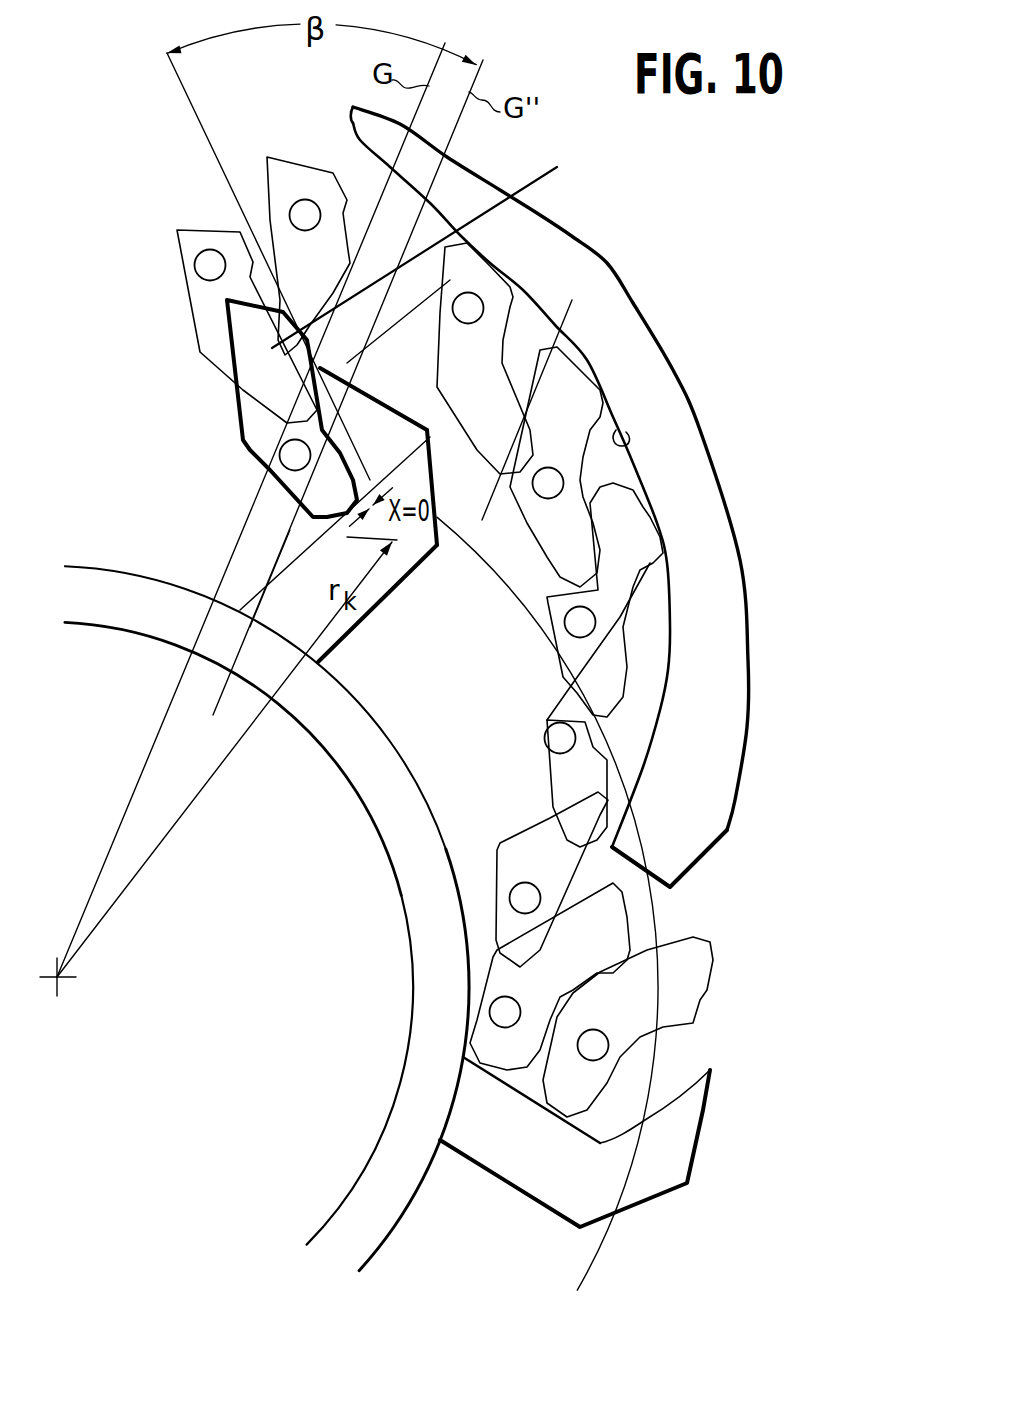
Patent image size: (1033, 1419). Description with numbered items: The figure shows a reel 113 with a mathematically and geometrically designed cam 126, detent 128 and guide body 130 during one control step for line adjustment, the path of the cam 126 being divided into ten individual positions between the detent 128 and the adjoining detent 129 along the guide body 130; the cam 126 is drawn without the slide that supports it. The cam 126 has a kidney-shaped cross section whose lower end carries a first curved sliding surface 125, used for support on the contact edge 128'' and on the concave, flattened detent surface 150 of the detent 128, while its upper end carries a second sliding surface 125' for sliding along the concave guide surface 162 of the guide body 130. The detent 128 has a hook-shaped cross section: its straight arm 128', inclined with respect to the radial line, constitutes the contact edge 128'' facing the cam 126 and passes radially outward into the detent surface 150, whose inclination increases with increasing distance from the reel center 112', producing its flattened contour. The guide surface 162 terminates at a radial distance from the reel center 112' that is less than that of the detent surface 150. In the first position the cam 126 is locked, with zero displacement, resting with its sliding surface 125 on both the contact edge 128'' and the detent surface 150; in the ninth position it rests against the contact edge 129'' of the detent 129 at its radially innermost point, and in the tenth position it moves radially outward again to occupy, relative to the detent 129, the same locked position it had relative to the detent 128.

The reel center 112' is at (99, 1006).
The reel 113 is at (765, 763).
The first curved sliding surface 125 is at (420, 677).
The second sliding surface 125' is at (439, 255).
The cam 126 is at (178, 236).
The detent 128 is at (468, 487).
The straight arm 128' is at (386, 611).
The contact edge 128'' is at (212, 578).
The adjoining detent 129 is at (603, 1146).
The contact edge 129'' is at (518, 1181).
The guide body 130 is at (727, 588).
The detent surface 150 is at (373, 398).
The guide surface 162 is at (630, 440).